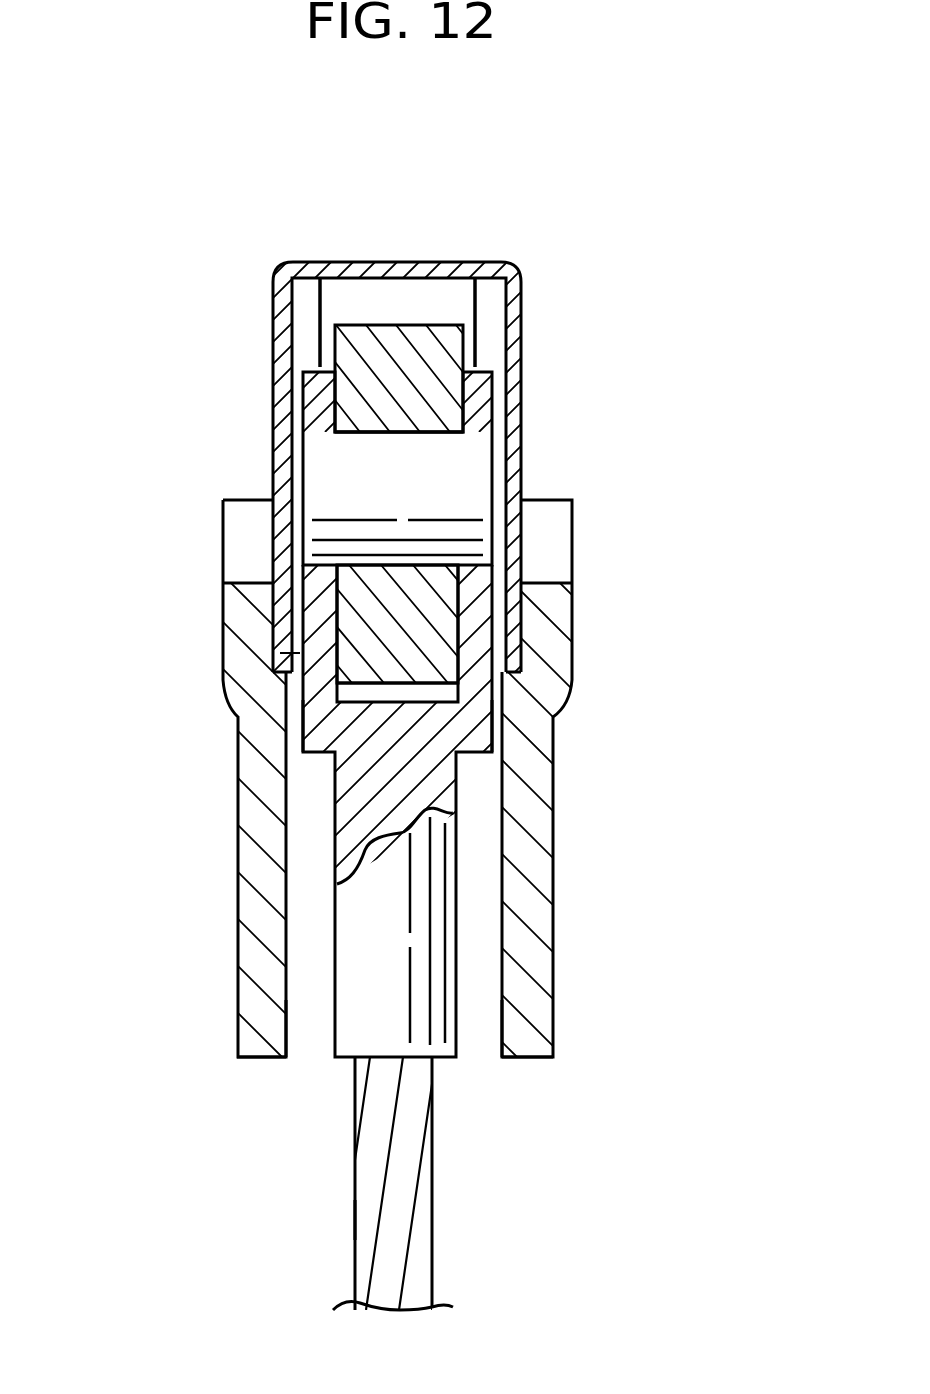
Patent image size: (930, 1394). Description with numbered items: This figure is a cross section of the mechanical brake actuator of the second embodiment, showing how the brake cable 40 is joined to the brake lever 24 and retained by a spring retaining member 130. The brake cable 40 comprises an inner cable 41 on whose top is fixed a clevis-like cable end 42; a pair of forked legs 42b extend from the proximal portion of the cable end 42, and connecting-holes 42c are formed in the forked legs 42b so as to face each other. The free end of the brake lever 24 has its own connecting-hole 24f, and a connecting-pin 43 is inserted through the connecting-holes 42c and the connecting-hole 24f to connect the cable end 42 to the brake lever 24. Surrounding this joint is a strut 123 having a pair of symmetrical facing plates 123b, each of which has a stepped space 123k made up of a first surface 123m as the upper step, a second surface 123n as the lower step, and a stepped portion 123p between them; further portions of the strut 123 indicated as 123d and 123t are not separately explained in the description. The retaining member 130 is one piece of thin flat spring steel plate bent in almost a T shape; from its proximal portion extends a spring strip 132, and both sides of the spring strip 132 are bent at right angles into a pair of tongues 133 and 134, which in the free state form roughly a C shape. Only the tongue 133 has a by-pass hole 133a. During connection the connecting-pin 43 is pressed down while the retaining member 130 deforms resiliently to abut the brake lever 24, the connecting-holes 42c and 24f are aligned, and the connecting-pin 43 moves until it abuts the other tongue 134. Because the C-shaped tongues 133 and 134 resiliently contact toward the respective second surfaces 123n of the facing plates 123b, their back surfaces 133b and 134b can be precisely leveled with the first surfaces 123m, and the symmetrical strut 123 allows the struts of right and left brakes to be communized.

The brake lever 24 is at (362, 318).
The connecting-hole 24f is at (387, 457).
The brake cable 40 is at (353, 1220).
The inner cable 41 is at (432, 1220).
The cable end 42 is at (460, 870).
The forked legs 42b is at (303, 710).
The connecting-holes 42c is at (327, 557).
The connecting-pin 43 is at (480, 490).
The strut 123 is at (222, 590).
The facing plates 123b is at (237, 920).
The slot between leg and fitting 123d is at (310, 1027).
The stepped space 123k is at (440, 596).
The first surface 123m is at (480, 1027).
The second surface 123n is at (517, 625).
The stepped portion 123p is at (290, 620).
The holder flange 123t is at (552, 540).
The retaining member 130 is at (517, 250).
The spring strip 132 is at (420, 262).
The tongue 133 is at (525, 323).
The by-pass hole 133a is at (525, 407).
The back surface 133b is at (500, 328).
The tongue 134 is at (275, 320).
The back surface 134b is at (296, 318).